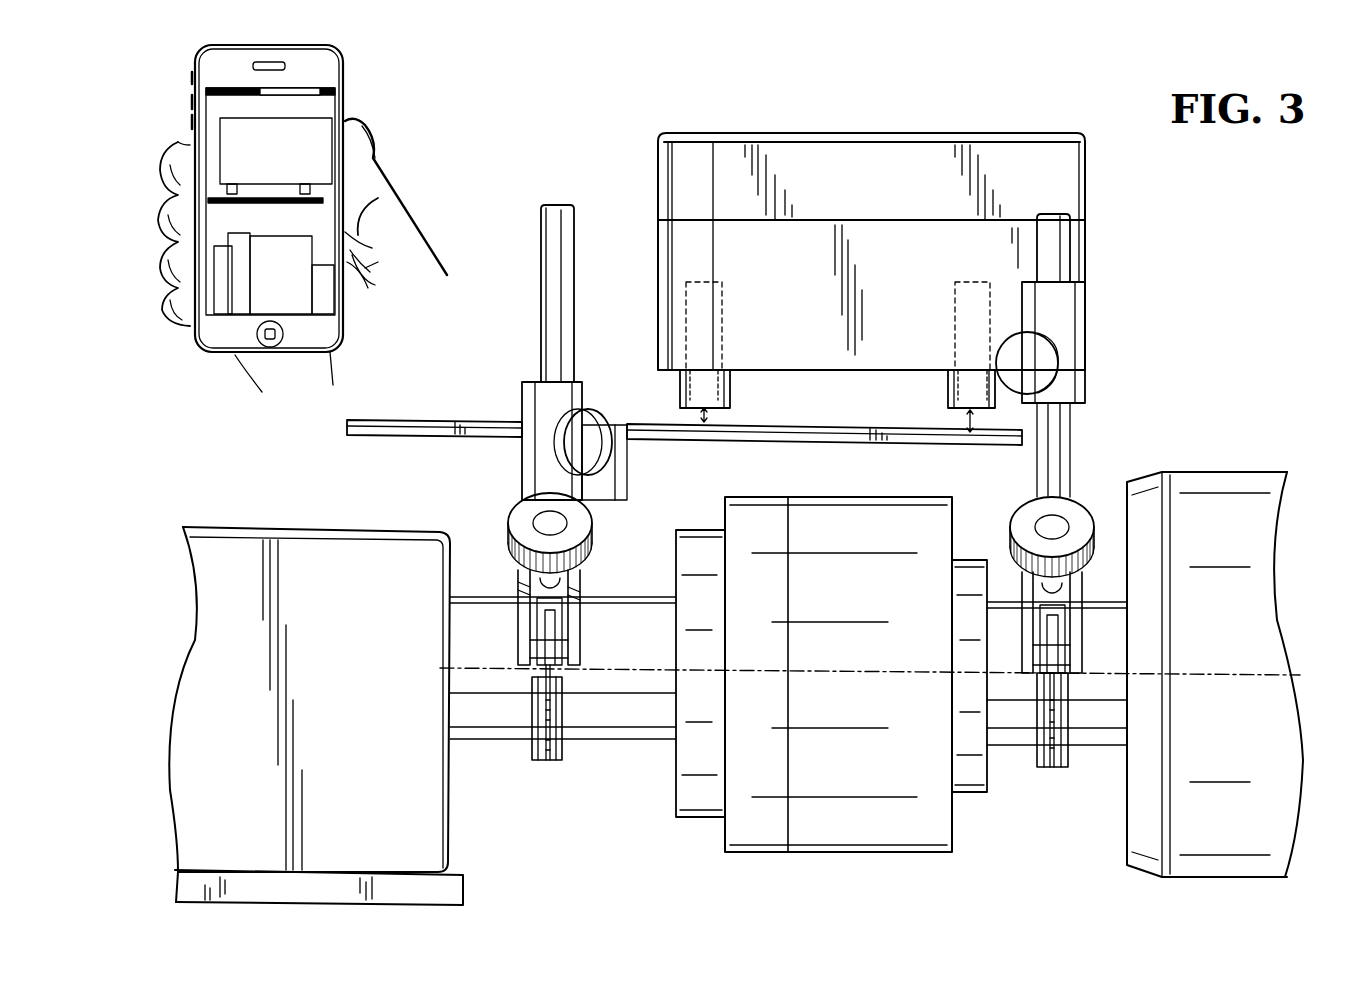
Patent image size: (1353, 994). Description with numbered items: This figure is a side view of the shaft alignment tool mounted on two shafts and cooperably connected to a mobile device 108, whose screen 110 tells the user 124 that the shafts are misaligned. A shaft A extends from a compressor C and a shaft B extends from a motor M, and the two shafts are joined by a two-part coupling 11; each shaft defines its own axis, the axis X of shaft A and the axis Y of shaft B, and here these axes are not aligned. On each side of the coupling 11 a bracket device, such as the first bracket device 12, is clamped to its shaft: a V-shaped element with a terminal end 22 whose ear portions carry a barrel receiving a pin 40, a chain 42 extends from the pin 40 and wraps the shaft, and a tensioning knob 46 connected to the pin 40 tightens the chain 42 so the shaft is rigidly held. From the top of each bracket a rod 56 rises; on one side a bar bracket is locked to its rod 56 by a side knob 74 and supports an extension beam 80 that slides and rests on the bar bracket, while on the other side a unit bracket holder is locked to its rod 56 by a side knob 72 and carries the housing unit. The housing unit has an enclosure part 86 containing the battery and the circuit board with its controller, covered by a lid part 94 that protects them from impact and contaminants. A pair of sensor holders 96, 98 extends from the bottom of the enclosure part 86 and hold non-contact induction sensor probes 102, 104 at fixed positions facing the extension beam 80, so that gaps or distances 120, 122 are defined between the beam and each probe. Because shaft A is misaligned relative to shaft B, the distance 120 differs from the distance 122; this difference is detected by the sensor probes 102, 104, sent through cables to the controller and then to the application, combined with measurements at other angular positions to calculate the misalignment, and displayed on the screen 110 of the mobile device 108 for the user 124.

The mobile device 108 is at (345, 58).
The screen 110 is at (215, 145).
The user 124 is at (403, 236).
The lid part 94 is at (853, 132).
The enclosure part 86 is at (799, 256).
The sensor probe 102 is at (722, 385).
The sensor probe 104 is at (950, 395).
The sensor holder 96 is at (720, 408).
The sensor holder 98 is at (960, 408).
The distance 120 is at (702, 418).
The distance 122 is at (973, 420).
The rod 56 is at (550, 255).
The side knob 74 is at (588, 428).
The side knob 72 is at (1040, 363).
The extension beam 80 is at (422, 418).
The first bracket device 12 is at (492, 538).
The tensioning knob 46 is at (578, 530).
The pin 40 is at (560, 580).
The terminal end 22 is at (576, 640).
The chain 42 is at (530, 760).
The coupling 11 is at (838, 827).
The shaft A is at (607, 700).
The shaft B is at (1098, 705).
The axis X is at (470, 667).
The axis Y is at (1195, 672).
The compressor C is at (303, 560).
The motor M is at (1240, 478).